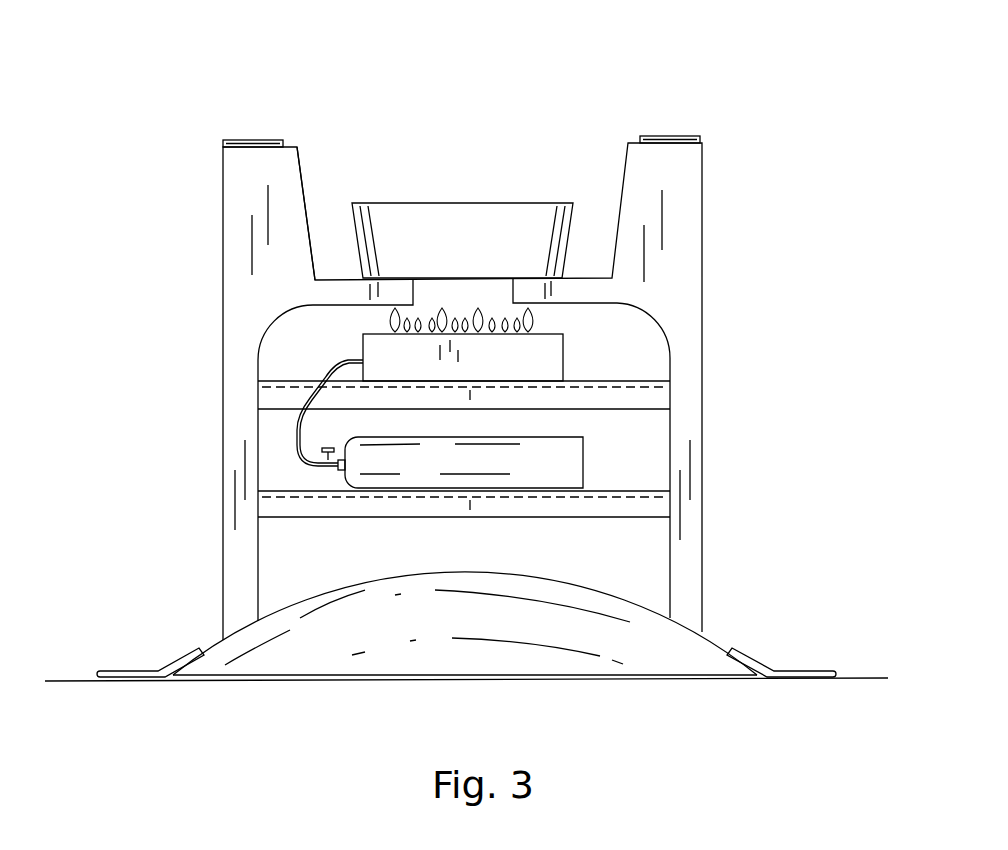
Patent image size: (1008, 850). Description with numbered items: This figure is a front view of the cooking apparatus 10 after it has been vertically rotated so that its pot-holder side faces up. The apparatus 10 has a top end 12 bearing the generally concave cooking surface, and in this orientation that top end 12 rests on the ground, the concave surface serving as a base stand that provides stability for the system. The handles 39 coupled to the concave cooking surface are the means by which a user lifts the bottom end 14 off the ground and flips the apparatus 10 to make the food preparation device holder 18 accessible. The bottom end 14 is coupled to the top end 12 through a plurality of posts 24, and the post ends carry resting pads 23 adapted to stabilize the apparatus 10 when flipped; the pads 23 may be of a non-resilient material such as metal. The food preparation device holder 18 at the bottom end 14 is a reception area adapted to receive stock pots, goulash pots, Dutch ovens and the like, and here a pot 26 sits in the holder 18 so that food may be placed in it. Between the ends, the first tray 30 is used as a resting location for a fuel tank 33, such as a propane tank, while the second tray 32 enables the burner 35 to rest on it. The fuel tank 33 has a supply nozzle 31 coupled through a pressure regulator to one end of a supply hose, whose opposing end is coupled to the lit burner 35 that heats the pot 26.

The cooking apparatus 10 is at (155, 335).
The top end 12 is at (849, 628).
The bottom end 14 is at (713, 127).
The food preparation device holder 18 is at (308, 182).
The resting pads 23 is at (236, 140).
The posts 24 is at (683, 252).
The pot 26 is at (472, 223).
The first tray 30 is at (657, 503).
The supply nozzle 31 is at (310, 452).
The second tray 32 is at (655, 395).
The fuel tank 33 is at (578, 463).
The burner 35 is at (552, 350).
The handles 39 is at (116, 674).